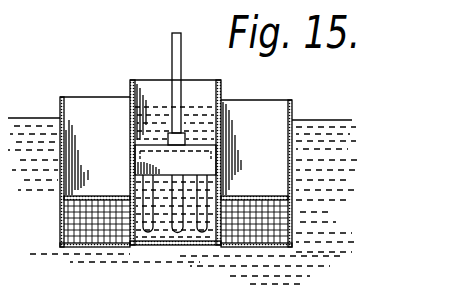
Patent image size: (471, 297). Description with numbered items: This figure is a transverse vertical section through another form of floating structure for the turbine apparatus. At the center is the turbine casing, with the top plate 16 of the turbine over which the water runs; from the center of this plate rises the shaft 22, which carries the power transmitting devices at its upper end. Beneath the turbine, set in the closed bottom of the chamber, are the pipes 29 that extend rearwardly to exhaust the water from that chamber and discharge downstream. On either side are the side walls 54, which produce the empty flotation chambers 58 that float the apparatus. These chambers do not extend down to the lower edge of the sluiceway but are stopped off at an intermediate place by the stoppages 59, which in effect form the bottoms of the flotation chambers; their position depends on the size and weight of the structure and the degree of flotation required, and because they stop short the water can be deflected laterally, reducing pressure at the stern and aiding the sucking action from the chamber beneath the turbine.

The top plate 16 is at (192, 143).
The shaft 22 is at (172, 48).
The pipes 29 is at (175, 224).
The side walls 54 is at (60, 105).
The flotation chambers 58 is at (176, 172).
The stoppages 59 is at (90, 200).